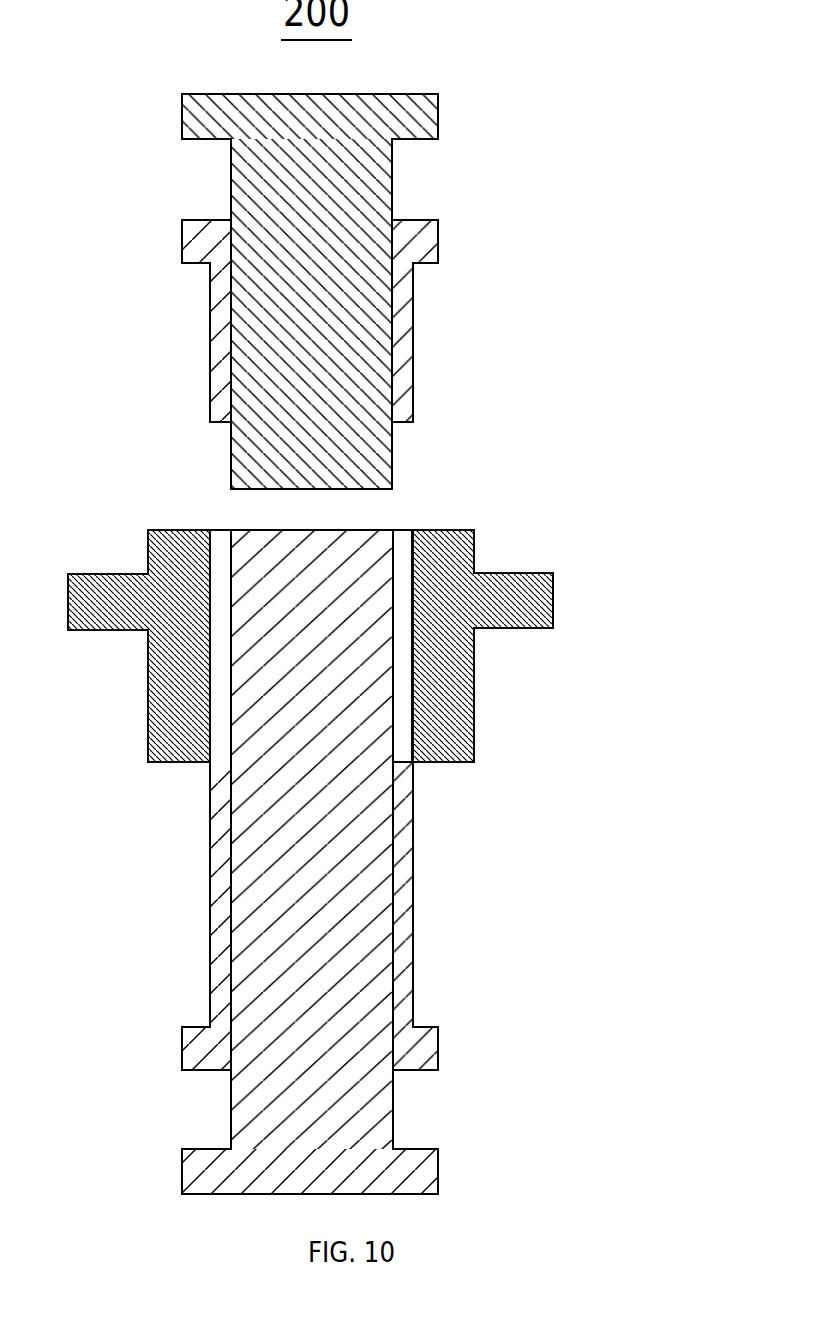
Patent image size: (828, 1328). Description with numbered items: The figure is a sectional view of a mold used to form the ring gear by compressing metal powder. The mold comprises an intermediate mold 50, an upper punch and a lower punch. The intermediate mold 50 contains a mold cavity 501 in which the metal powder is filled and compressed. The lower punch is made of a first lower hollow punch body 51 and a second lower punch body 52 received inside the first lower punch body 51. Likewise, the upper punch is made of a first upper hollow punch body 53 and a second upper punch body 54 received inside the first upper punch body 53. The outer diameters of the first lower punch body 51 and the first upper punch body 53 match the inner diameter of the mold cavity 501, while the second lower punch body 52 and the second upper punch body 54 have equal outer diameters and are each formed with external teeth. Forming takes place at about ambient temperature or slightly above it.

The intermediate mold 50 is at (553, 600).
The mold cavity 501 is at (402, 558).
The first lower hollow punch body 51 is at (402, 860).
The second lower punch body 52 is at (342, 987).
The first upper hollow punch body 53 is at (428, 245).
The second upper punch body 54 is at (327, 330).